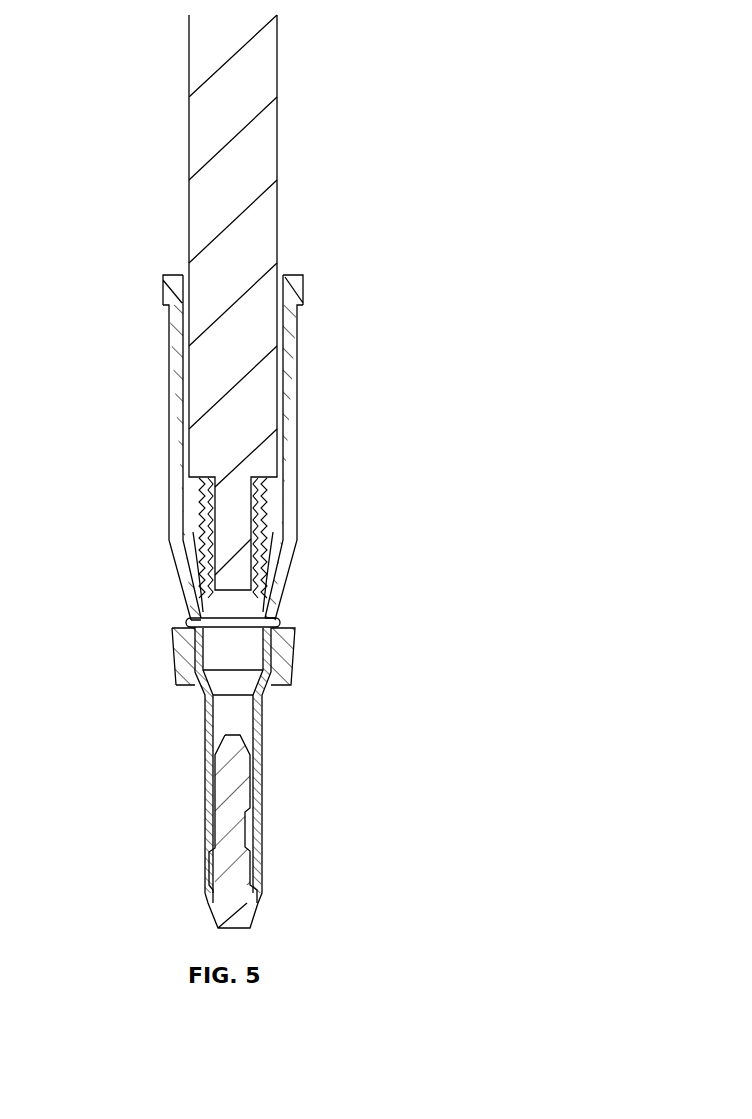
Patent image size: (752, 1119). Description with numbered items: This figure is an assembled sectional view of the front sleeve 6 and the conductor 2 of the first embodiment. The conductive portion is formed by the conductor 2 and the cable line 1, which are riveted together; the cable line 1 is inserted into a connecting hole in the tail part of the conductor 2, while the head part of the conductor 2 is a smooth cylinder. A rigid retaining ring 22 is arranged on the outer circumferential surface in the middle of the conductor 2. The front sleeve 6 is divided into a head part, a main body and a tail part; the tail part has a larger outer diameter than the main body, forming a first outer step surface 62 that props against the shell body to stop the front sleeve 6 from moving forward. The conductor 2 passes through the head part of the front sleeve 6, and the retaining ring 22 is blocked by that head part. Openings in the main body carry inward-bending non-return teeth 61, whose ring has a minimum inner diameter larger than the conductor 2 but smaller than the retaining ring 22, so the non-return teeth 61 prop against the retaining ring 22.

The cable line 1 is at (258, 140).
The conductor 2 is at (266, 770).
The front sleeve 6 is at (173, 445).
The non-return teeth 61 is at (292, 587).
The first outer step surface 62 is at (303, 293).
The retaining ring 22 is at (187, 618).